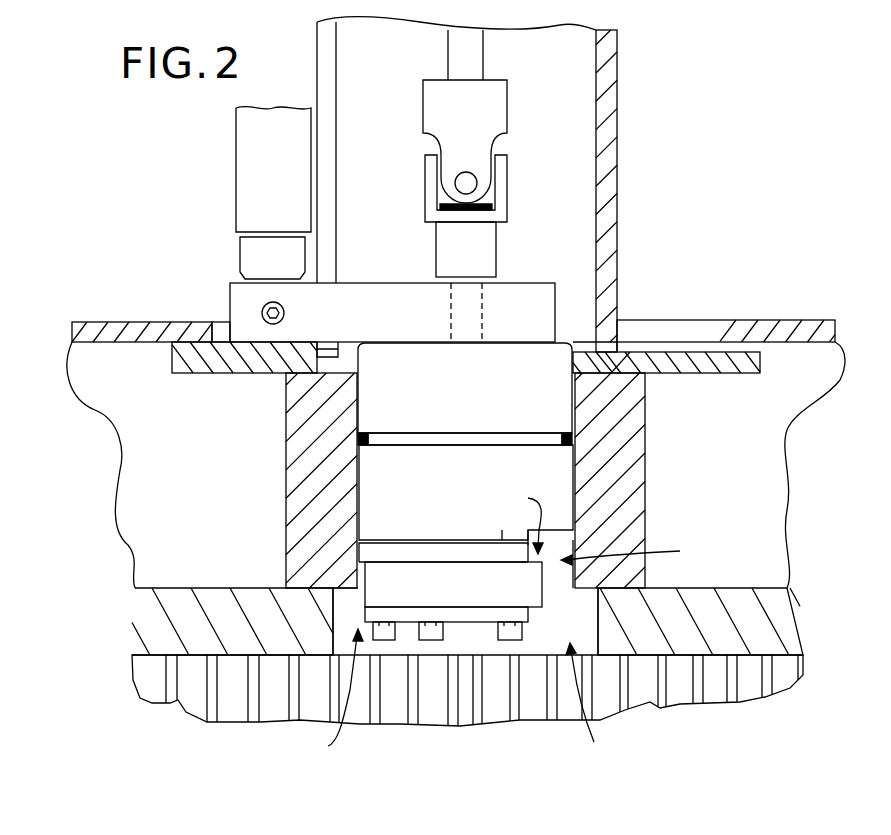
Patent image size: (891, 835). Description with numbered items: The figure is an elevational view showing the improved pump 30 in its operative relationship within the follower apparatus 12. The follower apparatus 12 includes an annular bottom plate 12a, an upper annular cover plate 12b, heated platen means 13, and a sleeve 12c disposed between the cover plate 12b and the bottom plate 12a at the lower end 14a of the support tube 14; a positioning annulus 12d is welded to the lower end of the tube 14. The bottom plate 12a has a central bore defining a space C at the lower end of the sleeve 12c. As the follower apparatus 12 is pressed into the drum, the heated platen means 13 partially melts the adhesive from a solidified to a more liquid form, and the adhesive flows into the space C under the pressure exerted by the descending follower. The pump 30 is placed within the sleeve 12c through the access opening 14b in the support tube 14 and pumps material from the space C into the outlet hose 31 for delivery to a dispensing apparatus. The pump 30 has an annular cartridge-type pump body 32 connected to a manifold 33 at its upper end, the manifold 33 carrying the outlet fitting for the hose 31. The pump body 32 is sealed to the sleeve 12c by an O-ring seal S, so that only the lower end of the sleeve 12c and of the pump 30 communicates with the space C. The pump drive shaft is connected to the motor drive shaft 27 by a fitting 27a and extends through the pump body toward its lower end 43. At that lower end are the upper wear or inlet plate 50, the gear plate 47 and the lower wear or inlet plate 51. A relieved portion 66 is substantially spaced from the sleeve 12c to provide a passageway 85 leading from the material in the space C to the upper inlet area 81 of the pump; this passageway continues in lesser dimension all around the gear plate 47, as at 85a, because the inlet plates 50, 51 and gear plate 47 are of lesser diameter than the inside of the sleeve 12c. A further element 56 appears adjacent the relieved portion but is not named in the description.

The follower apparatus 12 is at (847, 438).
The annular bottom plate 12a is at (780, 613).
The upper annular cover plate 12b is at (822, 330).
The sleeve 12c is at (638, 478).
The positioning annulus 12d is at (725, 372).
The heated platen means 13 is at (808, 692).
The support tube 14 is at (624, 172).
The lower end of support tube 14a is at (614, 362).
The access opening 14b is at (322, 86).
The drive shaft 27 is at (476, 68).
The fitting 27a is at (488, 243).
The pump 30 is at (446, 676).
The outlet hose 31 is at (241, 200).
The pump body 32 is at (372, 487).
The manifold 33 is at (590, 287).
The lower end of pump body 43 is at (358, 550).
The gear plate 47 is at (428, 576).
The upper wear or inlet plate 50 is at (470, 552).
The lower wear or inlet plate 51 is at (450, 614).
The shoulder 56 is at (578, 540).
The relieved portion 66 is at (563, 590).
The upper inlet area 81 is at (522, 522).
The passageway 85 is at (636, 552).
The passageway of lesser dimension 85a is at (355, 585).
The space C is at (588, 702).
The O-ring seal S is at (580, 436).